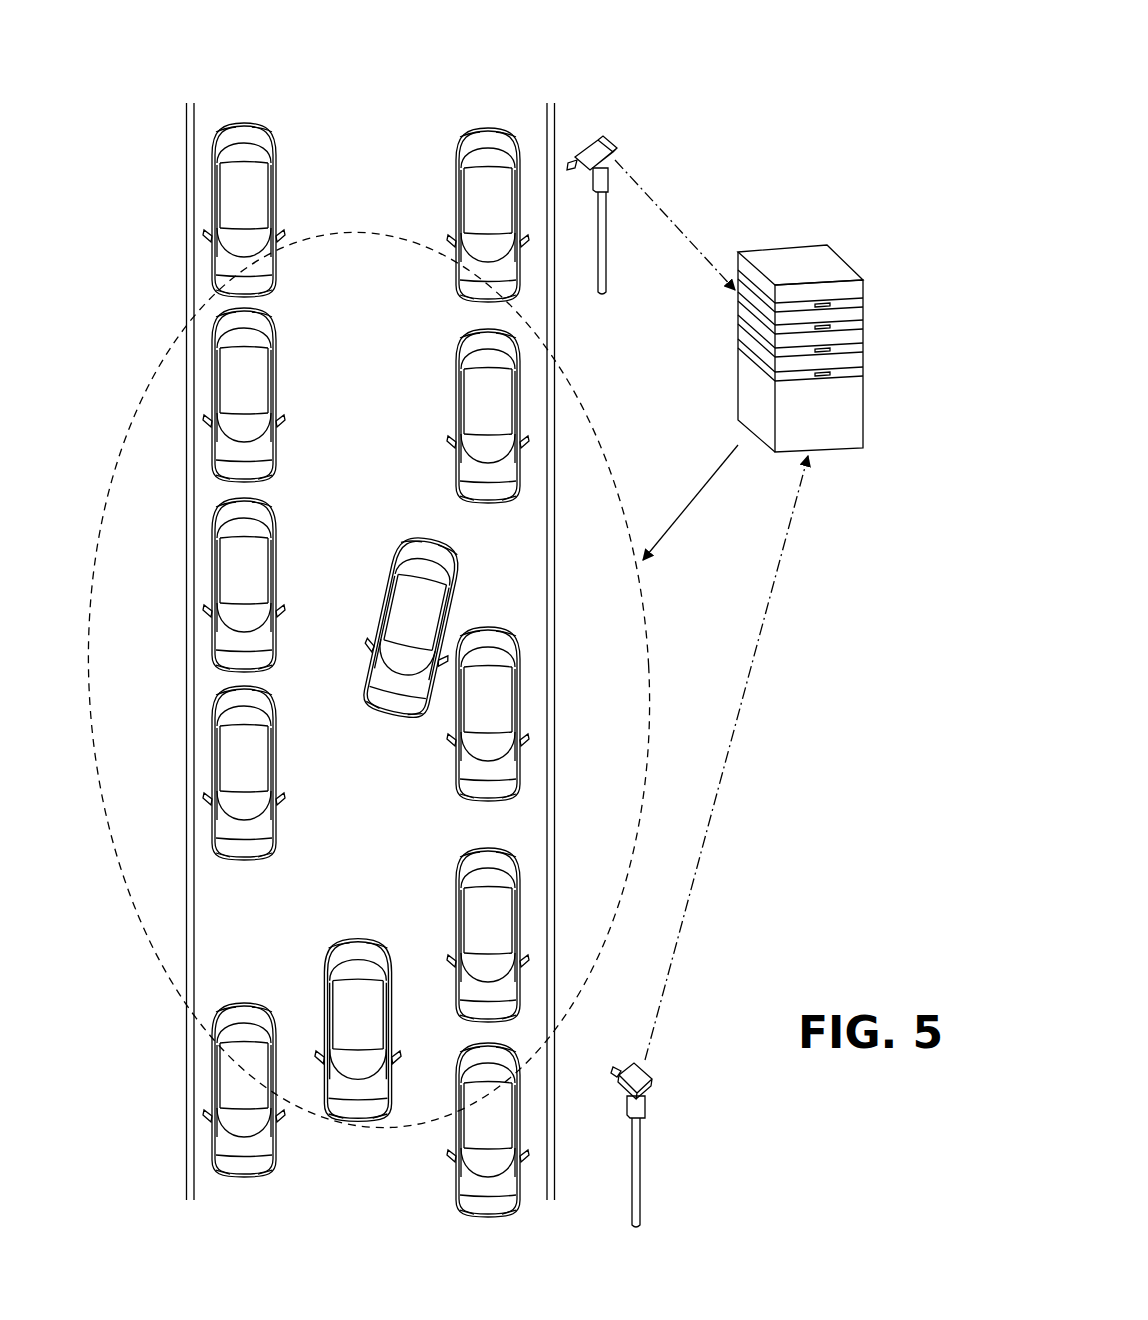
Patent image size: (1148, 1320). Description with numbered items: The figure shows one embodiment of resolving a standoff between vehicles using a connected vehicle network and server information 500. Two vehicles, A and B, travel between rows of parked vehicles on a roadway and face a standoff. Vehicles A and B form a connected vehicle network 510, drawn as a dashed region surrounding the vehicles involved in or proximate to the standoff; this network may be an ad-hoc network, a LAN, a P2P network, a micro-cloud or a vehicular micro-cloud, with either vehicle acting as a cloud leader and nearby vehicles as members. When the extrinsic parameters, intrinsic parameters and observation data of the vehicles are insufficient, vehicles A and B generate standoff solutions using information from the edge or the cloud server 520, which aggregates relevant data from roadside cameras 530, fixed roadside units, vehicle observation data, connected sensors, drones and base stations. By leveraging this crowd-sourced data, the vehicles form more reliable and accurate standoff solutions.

The resolving a standoff using a connected vehicle network and server information 500 is at (790, 84).
The connected vehicle network 510 is at (128, 908).
The edge or cloud server 520 is at (862, 358).
The cameras 530 is at (620, 147).